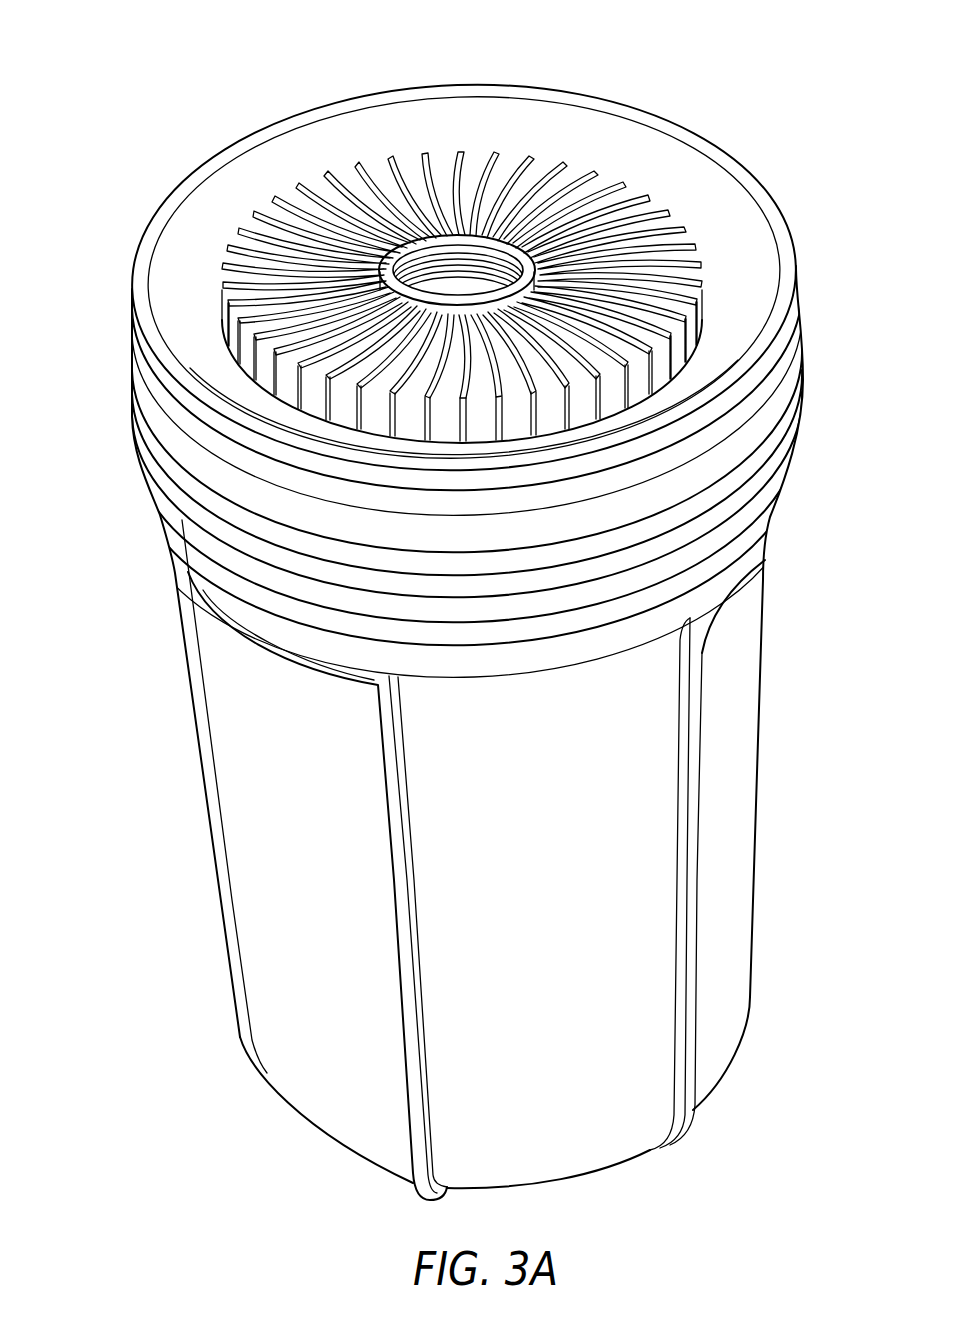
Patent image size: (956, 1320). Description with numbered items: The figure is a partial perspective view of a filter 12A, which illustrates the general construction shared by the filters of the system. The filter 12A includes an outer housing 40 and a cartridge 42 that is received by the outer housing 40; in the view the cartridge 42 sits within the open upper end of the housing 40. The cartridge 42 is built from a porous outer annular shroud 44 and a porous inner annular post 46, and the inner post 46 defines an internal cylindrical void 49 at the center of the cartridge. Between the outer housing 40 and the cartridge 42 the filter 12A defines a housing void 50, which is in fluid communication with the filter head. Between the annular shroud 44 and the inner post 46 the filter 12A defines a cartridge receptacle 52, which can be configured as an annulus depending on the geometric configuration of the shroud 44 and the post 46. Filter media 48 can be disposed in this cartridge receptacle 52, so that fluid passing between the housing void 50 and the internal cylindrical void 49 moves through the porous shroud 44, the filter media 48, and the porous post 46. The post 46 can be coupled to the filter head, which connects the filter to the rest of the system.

The filter 12A is at (423, 601).
The outer housing 40 is at (443, 637).
The cartridge 42 is at (373, 244).
The porous outer annular shroud 44 is at (232, 322).
The porous inner annular post 46 is at (500, 240).
The filter media 48 is at (357, 213).
The internal cylindrical void 49 is at (433, 270).
The housing void 50 is at (185, 263).
The cartridge receptacle 52 is at (586, 258).